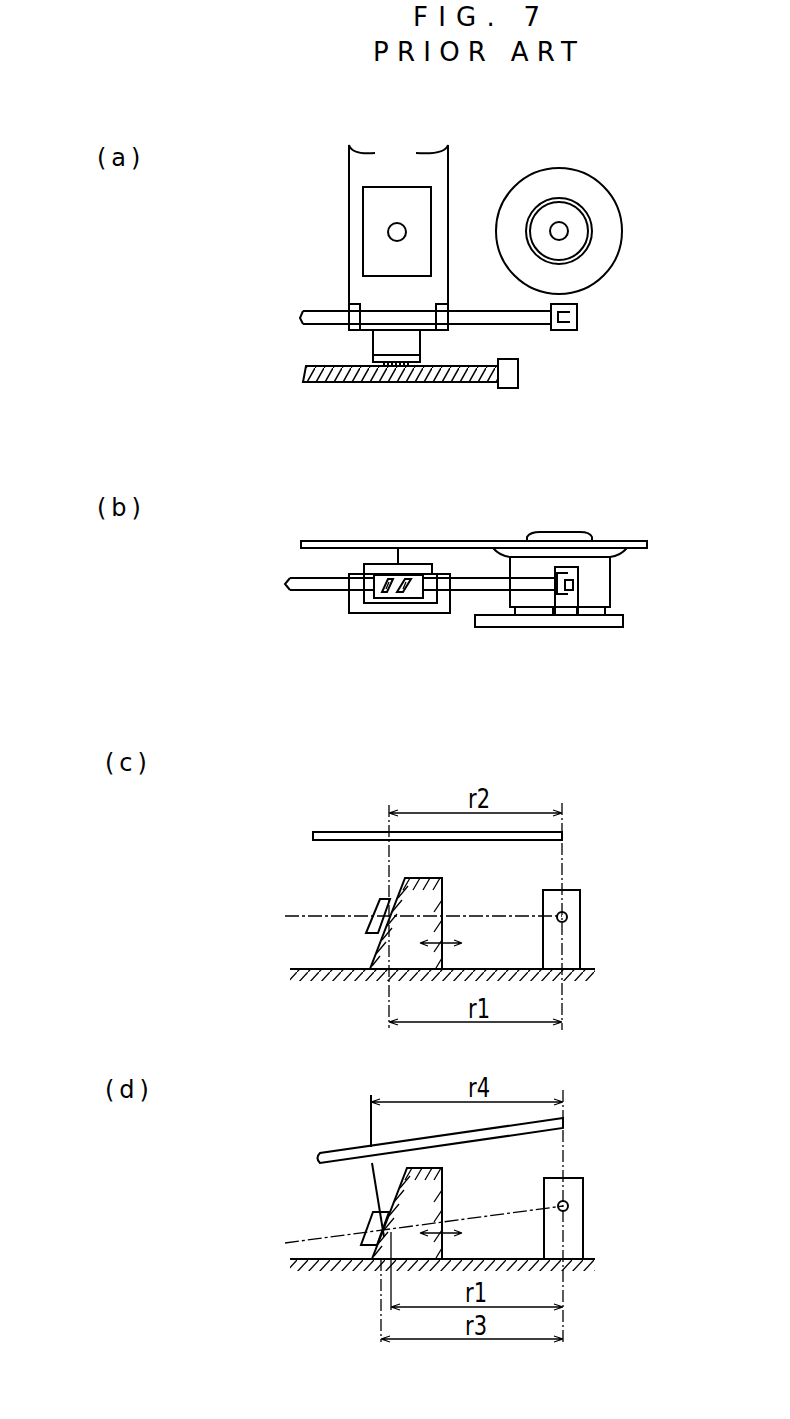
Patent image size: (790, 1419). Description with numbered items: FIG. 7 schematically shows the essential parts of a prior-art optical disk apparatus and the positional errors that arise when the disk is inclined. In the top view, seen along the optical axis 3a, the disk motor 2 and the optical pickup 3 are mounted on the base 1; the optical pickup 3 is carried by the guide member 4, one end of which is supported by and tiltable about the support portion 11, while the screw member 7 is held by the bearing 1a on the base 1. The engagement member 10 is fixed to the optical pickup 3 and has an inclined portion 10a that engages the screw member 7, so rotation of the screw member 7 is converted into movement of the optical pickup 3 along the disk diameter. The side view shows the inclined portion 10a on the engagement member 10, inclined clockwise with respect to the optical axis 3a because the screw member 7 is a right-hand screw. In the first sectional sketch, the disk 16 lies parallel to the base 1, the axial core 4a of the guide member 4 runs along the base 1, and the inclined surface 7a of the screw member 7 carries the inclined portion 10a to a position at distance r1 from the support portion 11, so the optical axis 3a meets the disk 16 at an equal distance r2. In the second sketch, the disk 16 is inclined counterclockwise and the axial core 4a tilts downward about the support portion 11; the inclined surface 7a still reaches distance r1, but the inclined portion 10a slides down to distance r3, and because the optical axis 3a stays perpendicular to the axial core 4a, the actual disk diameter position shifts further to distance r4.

The base 1 is at (603, 621).
The bearing 1a is at (508, 375).
The disk motor 2 is at (604, 230).
The optical pickup 3 is at (375, 243).
The optical axis 3a is at (402, 560).
The guide member 4 is at (525, 318).
The axial core 4a is at (297, 914).
The screw member 7 is at (448, 378).
The inclined surface 7a is at (405, 878).
The engagement member 10 is at (373, 345).
The inclined portion 10a is at (410, 358).
The support portion 11 is at (577, 323).
The disk 16 is at (348, 541).